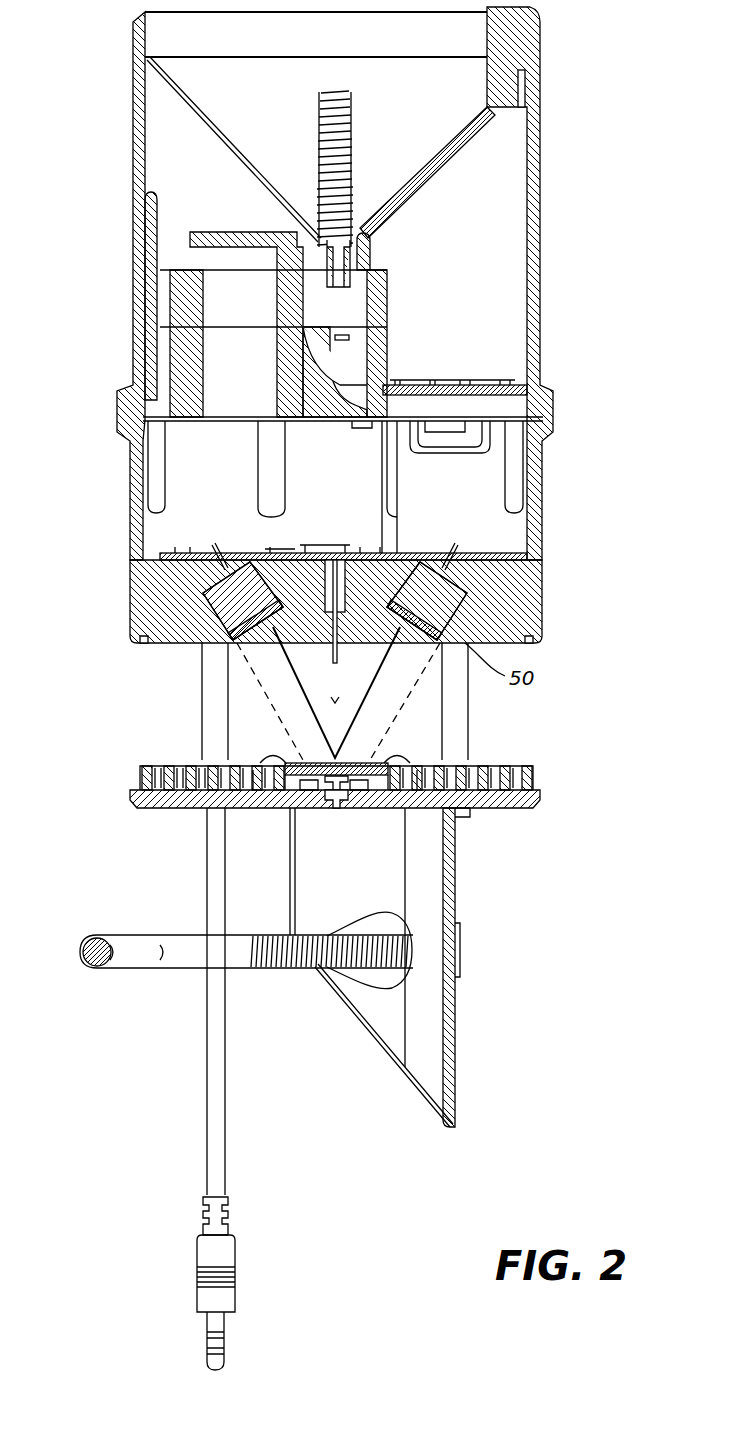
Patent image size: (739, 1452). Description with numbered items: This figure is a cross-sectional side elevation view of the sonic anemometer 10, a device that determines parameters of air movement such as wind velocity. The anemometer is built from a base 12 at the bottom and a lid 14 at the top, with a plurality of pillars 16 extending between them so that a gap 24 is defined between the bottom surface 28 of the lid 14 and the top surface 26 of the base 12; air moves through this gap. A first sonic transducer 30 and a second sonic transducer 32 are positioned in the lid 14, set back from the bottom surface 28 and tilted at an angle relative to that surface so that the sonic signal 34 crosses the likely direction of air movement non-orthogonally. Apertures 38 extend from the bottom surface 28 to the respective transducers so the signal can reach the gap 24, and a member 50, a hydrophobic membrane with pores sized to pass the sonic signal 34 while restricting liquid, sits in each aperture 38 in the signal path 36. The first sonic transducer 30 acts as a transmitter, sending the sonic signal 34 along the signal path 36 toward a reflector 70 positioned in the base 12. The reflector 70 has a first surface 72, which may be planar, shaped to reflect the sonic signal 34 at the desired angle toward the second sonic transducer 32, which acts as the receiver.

The sonic anemometer 10 is at (122, 48).
The base 12 is at (537, 793).
The lid 14 is at (543, 476).
The pillars 16 is at (208, 735).
The gap 24 is at (128, 647).
The top surface 26 is at (523, 768).
The bottom surface 28 is at (518, 643).
The first sonic transducer 30 is at (243, 600).
The second sonic transducer 32 is at (427, 600).
The sonic signal 34 is at (300, 698).
The signal path 36 is at (250, 668).
The apertures 38 is at (393, 638).
The member 50 is at (205, 643).
The reflector 70 is at (417, 790).
The first surface 72 is at (253, 790).